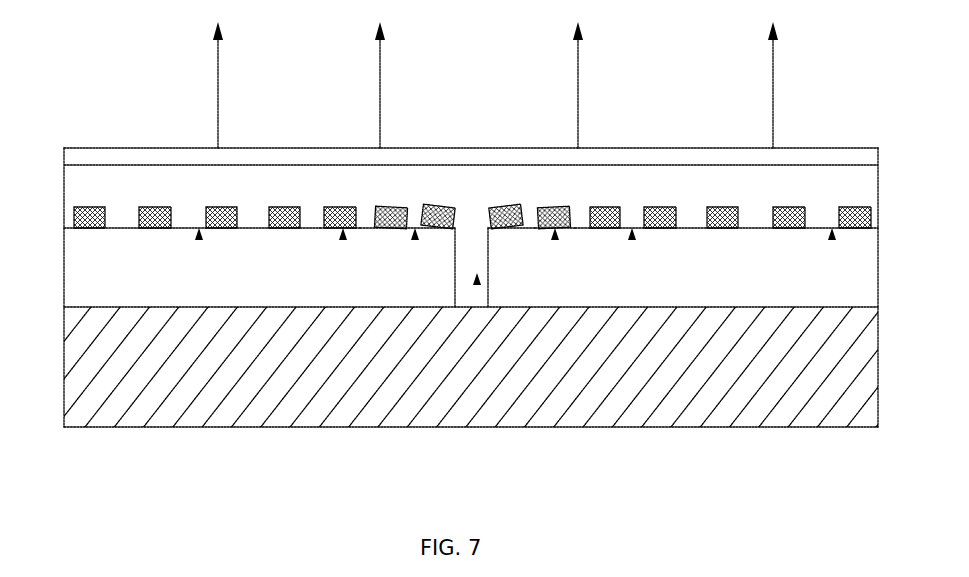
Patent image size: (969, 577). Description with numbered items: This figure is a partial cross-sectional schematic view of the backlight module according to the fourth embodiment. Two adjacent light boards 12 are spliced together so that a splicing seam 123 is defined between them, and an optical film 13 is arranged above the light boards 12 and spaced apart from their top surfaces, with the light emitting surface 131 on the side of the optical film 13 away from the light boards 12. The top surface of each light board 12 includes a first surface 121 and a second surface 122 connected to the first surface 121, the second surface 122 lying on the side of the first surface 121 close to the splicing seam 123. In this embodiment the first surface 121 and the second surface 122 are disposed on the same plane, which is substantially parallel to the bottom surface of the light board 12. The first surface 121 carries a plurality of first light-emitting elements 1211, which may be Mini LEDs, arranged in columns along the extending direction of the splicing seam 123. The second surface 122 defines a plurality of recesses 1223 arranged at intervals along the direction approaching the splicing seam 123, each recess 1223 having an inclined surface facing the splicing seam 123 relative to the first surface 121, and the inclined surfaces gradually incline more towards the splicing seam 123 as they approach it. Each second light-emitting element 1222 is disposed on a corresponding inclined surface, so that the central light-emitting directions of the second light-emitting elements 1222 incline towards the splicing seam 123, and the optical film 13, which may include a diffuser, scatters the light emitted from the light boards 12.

The light board 12 is at (260, 273).
The first surface 121 is at (199, 240).
The second surface 122 is at (415, 240).
The splicing seam 123 is at (476, 285).
The first light-emitting element 1211 is at (222, 213).
The second light-emitting element 1222 is at (340, 222).
The recess 1223 is at (343, 240).
The optical film 13 is at (123, 157).
The light emitting surface 131 is at (653, 148).